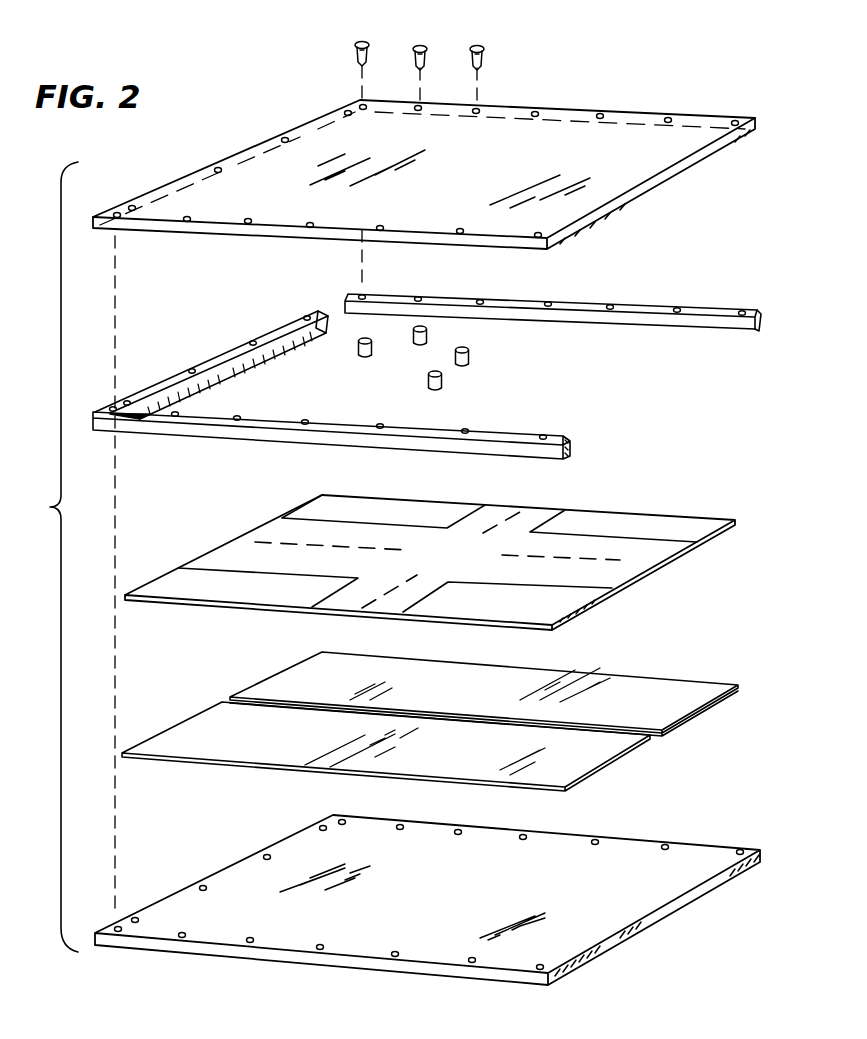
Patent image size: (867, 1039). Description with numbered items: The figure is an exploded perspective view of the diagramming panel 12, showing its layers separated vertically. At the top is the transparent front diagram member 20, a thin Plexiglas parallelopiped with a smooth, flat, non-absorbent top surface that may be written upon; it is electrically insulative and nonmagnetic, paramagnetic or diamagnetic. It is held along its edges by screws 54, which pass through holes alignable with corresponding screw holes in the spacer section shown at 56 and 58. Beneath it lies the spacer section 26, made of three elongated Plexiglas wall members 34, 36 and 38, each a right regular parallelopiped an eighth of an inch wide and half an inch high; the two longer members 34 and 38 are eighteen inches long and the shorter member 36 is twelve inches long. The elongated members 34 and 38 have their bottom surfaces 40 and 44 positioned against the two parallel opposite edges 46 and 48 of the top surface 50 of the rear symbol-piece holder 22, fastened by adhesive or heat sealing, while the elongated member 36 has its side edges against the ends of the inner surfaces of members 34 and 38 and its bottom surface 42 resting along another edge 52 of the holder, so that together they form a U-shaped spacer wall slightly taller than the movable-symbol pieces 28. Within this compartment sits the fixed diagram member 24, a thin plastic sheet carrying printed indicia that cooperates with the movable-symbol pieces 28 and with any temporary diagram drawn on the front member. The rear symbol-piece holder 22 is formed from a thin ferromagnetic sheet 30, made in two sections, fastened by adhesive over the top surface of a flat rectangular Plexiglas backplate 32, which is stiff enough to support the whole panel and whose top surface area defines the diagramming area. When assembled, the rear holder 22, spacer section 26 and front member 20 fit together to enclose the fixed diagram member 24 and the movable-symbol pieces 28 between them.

The diagramming panel 12 is at (48, 557).
The transparent front diagram member 20 is at (694, 178).
The rear symbol-piece holder 22 is at (700, 808).
The fixed diagram member 24 is at (645, 583).
The spacer section 26 is at (614, 398).
The movable-symbol pieces 28 is at (483, 323).
The sheet of ferromagnetic material 30 is at (438, 708).
The backplate 32 is at (763, 853).
The elongated wall member 34 is at (553, 313).
The elongated wall member 36 is at (211, 364).
The elongated wall member 38 is at (333, 448).
The bottom surface 40 is at (716, 328).
The bottom surface 42 is at (228, 368).
The bottom surface 44 is at (531, 461).
The edge of top surface 46 is at (484, 681).
The edge of top surface 48 is at (176, 753).
The top surface 50 is at (653, 692).
The edge 52 is at (283, 683).
The screws 54 is at (354, 46).
The screw holes 56 is at (428, 103).
The screw holes 58 is at (365, 293).